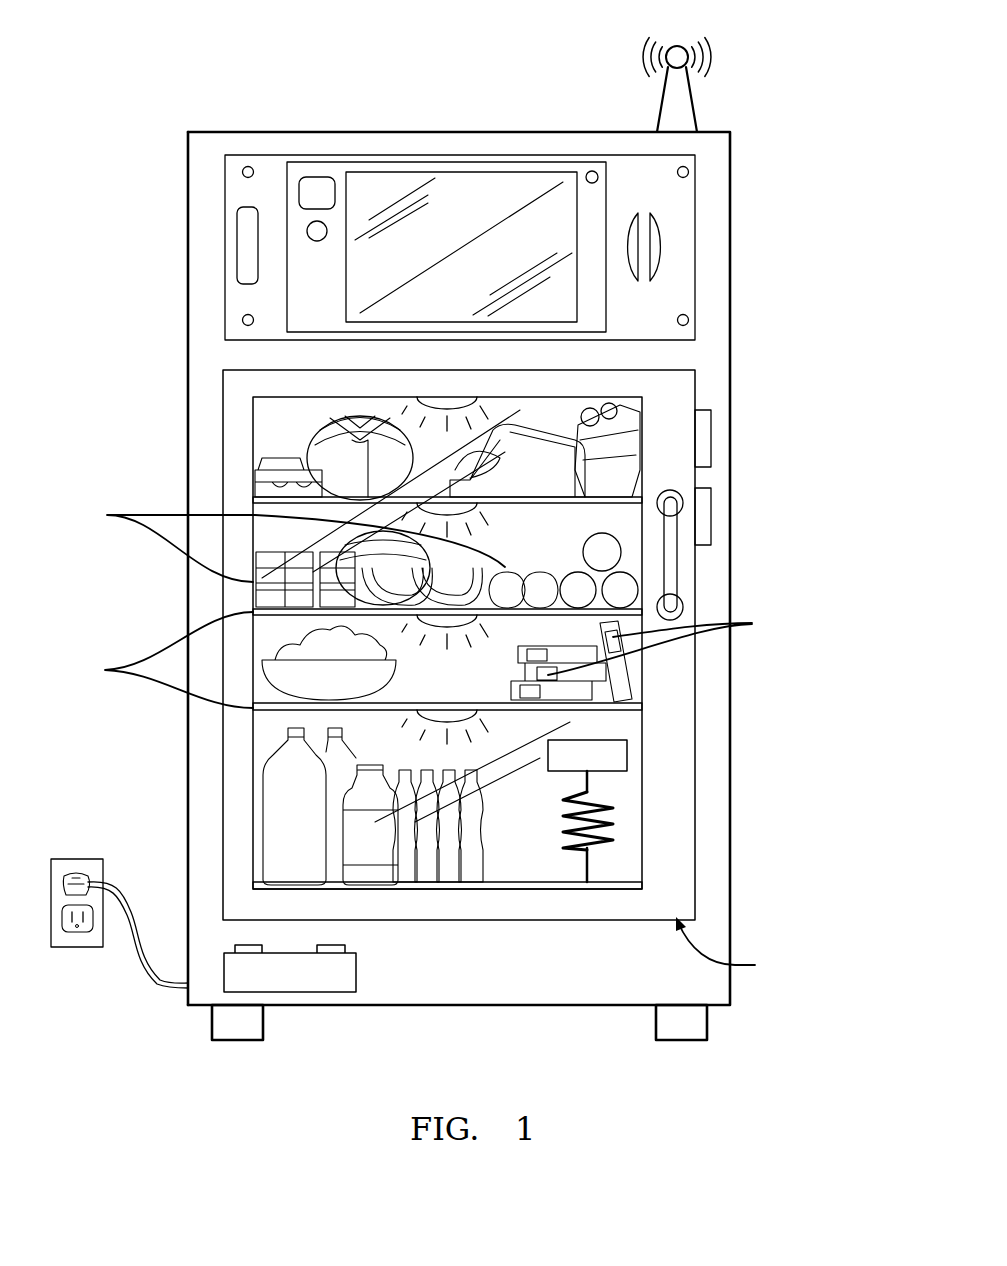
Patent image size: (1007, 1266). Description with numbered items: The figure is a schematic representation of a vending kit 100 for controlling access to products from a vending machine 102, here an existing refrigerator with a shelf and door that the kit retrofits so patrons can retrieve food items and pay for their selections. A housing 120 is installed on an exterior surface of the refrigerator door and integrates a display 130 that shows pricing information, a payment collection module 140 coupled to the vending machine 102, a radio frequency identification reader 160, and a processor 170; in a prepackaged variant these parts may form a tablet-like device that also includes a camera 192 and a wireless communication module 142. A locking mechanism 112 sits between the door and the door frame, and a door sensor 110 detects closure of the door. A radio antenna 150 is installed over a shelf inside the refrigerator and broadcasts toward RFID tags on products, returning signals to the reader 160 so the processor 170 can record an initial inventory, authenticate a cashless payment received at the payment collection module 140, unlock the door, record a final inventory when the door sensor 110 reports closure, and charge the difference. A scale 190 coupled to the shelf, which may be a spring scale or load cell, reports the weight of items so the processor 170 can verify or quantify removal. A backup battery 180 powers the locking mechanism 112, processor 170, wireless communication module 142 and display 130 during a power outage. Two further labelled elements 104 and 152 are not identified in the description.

The vending kit 100 is at (178, 50).
The vending machine 102 is at (188, 797).
The cabinet side wall 104 is at (188, 743).
The door sensor 110 is at (711, 430).
The locking mechanism 112 is at (711, 518).
The housing 120 is at (693, 276).
The display 130 is at (475, 195).
The payment collection module 140 is at (668, 230).
The wireless communication module 142 is at (723, 57).
The radio antenna 150 is at (445, 396).
The shelf light / sensor 152 is at (452, 613).
The radio frequency identification reader 160 is at (240, 248).
The processor 170 is at (316, 182).
The backup battery 180 is at (297, 977).
The scale 190 is at (598, 846).
The camera 192 is at (592, 171).